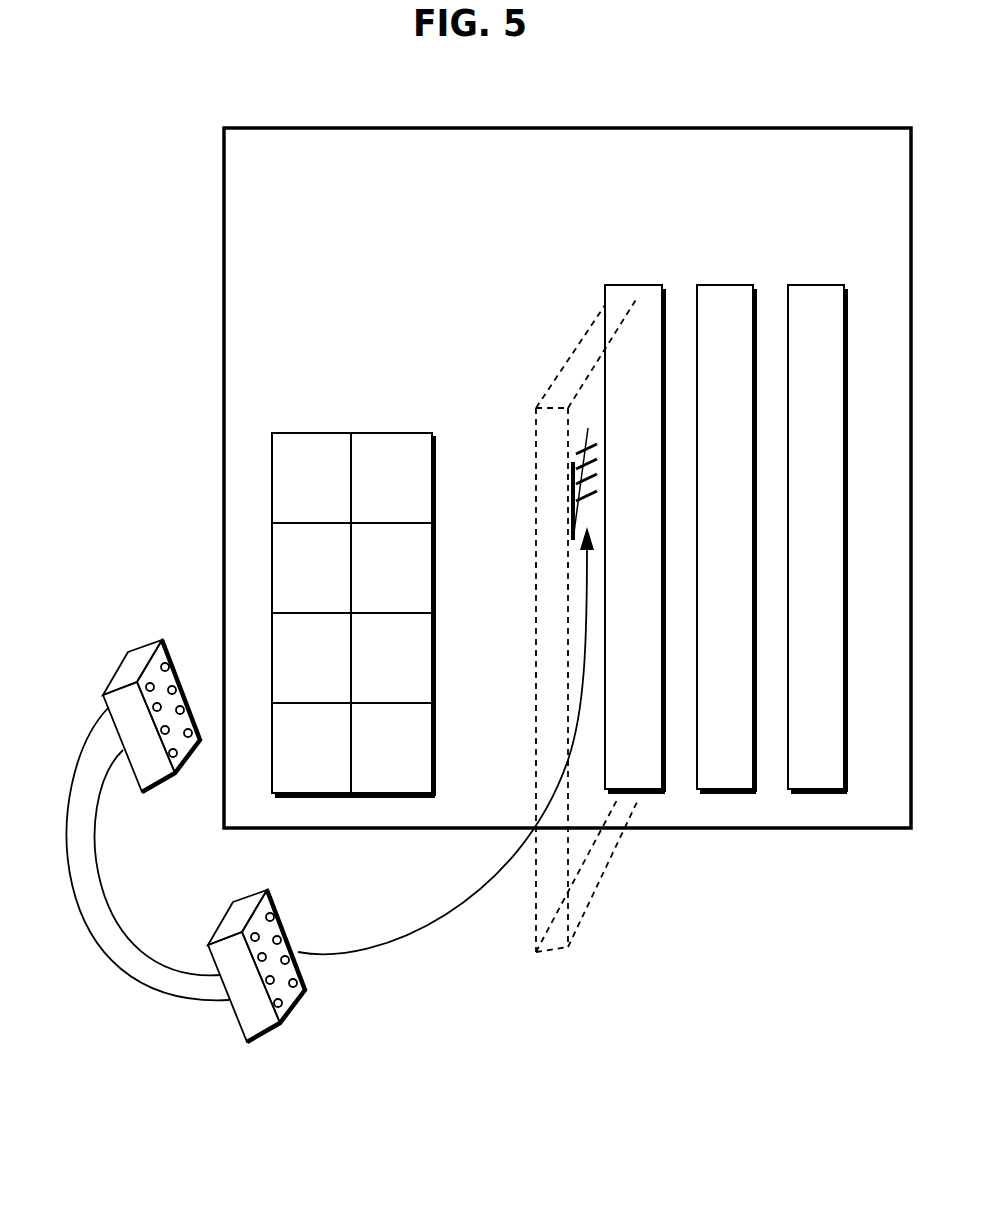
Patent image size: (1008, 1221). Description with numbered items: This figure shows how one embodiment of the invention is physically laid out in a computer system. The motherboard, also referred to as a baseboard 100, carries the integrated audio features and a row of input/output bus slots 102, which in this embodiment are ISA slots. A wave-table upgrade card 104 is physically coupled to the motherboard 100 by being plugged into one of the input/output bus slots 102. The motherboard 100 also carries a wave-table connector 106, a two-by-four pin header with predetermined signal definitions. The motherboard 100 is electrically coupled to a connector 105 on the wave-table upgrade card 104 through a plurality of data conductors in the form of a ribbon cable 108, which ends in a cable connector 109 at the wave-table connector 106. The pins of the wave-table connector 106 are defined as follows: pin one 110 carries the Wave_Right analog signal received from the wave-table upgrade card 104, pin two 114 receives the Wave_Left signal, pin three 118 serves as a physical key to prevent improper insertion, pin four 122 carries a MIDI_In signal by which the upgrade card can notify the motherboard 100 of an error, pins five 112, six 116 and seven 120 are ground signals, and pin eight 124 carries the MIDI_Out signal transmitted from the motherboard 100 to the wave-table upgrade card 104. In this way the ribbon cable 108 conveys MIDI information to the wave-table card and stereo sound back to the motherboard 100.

The motherboard/baseboard 100 is at (567, 478).
The input/output bus slots 102 is at (817, 265).
The wave-table upgrade card 104 is at (527, 519).
The connector 105 is at (578, 411).
The wave-table connector 106 is at (226, 577).
The ribbon cable 108 is at (161, 944).
The cable connector to wave table connector 109 is at (188, 648).
The pin 1 110 is at (311, 478).
The pin 5 112 is at (391, 478).
The pin 2 114 is at (311, 568).
The pin 6 116 is at (391, 568).
The pin 3 118 is at (311, 658).
The pin 7 120 is at (391, 658).
The pin 4 122 is at (311, 748).
The pin 8 124 is at (391, 748).